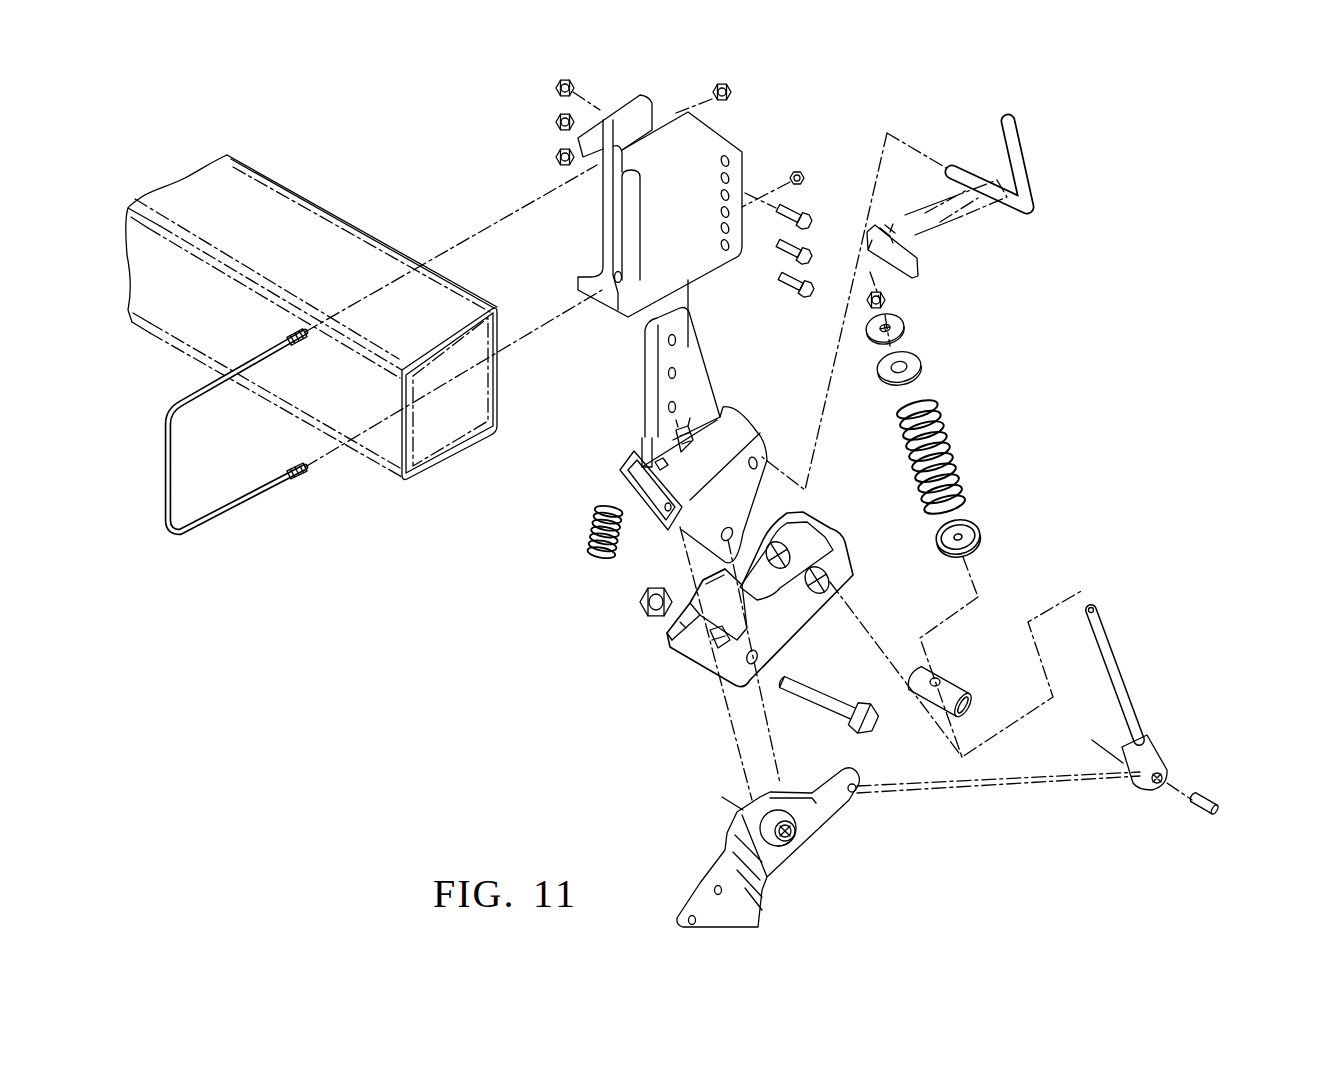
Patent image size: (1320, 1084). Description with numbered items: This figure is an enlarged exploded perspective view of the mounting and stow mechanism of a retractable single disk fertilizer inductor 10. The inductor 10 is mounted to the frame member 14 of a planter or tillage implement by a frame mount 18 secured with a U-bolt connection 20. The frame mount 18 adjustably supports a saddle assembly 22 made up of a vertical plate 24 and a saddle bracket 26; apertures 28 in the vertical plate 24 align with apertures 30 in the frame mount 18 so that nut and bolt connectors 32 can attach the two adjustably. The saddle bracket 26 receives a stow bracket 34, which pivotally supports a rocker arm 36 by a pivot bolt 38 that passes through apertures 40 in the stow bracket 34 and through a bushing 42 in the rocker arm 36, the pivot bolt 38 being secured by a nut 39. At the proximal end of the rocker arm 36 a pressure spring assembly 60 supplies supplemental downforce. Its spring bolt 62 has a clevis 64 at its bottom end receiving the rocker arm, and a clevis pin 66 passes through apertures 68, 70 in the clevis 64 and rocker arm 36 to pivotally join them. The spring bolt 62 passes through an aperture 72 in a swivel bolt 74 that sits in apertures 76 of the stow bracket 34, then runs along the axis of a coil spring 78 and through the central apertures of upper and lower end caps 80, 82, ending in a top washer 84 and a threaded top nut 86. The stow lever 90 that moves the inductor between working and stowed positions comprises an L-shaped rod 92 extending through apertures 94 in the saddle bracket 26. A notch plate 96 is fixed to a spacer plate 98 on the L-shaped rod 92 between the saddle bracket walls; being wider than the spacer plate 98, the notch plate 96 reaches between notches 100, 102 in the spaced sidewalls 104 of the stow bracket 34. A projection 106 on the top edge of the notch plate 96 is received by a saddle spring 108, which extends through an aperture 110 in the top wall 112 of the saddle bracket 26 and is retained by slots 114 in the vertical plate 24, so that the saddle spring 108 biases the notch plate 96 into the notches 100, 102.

The retractable single disk fertilizer inductor 10 is at (1163, 297).
The frame member 14 is at (288, 212).
The frame mount 18 is at (712, 205).
The U-bolt connection 20 is at (215, 511).
The saddle assembly 22 is at (665, 426).
The vertical plate 24 is at (683, 404).
The saddle bracket 26 is at (738, 473).
The apertures 28 is at (668, 372).
The apertures 30 is at (728, 177).
The nut and bolt connectors 32 is at (800, 213).
The stow bracket 34 is at (750, 633).
The rocker arm 36 is at (773, 847).
The pivot bolt 38 is at (827, 700).
The nut 39 is at (642, 603).
The apertures 40 is at (722, 783).
The bushing 42 is at (787, 842).
The pressure spring assembly 60 is at (1103, 469).
The spring bolt 62 is at (1118, 682).
The clevis 64 is at (1164, 780).
The clevis pin 66 is at (1208, 797).
The aperture 68 is at (1157, 790).
The aperture 70 is at (855, 798).
The aperture 72 is at (938, 675).
The swivel bolt 74 is at (963, 669).
The apertures 76 is at (830, 583).
The coil spring 78 is at (957, 438).
The upper end cap 80 is at (920, 368).
The lower end cap 82 is at (978, 525).
The top washer 84 is at (902, 328).
The top nut 86 is at (885, 297).
The stow lever 90 is at (1000, 202).
The L-shaped rod 92 is at (1025, 183).
The apertures 94 is at (762, 457).
The notch plate 96 is at (923, 268).
The spacer plate 98 is at (933, 233).
The notch 100 is at (700, 670).
The notch 102 is at (676, 647).
The spaced sidewalls 104 is at (717, 648).
The projection 106 is at (890, 227).
The saddle spring 108 is at (592, 540).
The aperture 110 is at (622, 477).
The top wall 112 is at (655, 462).
The slots 114 is at (680, 436).